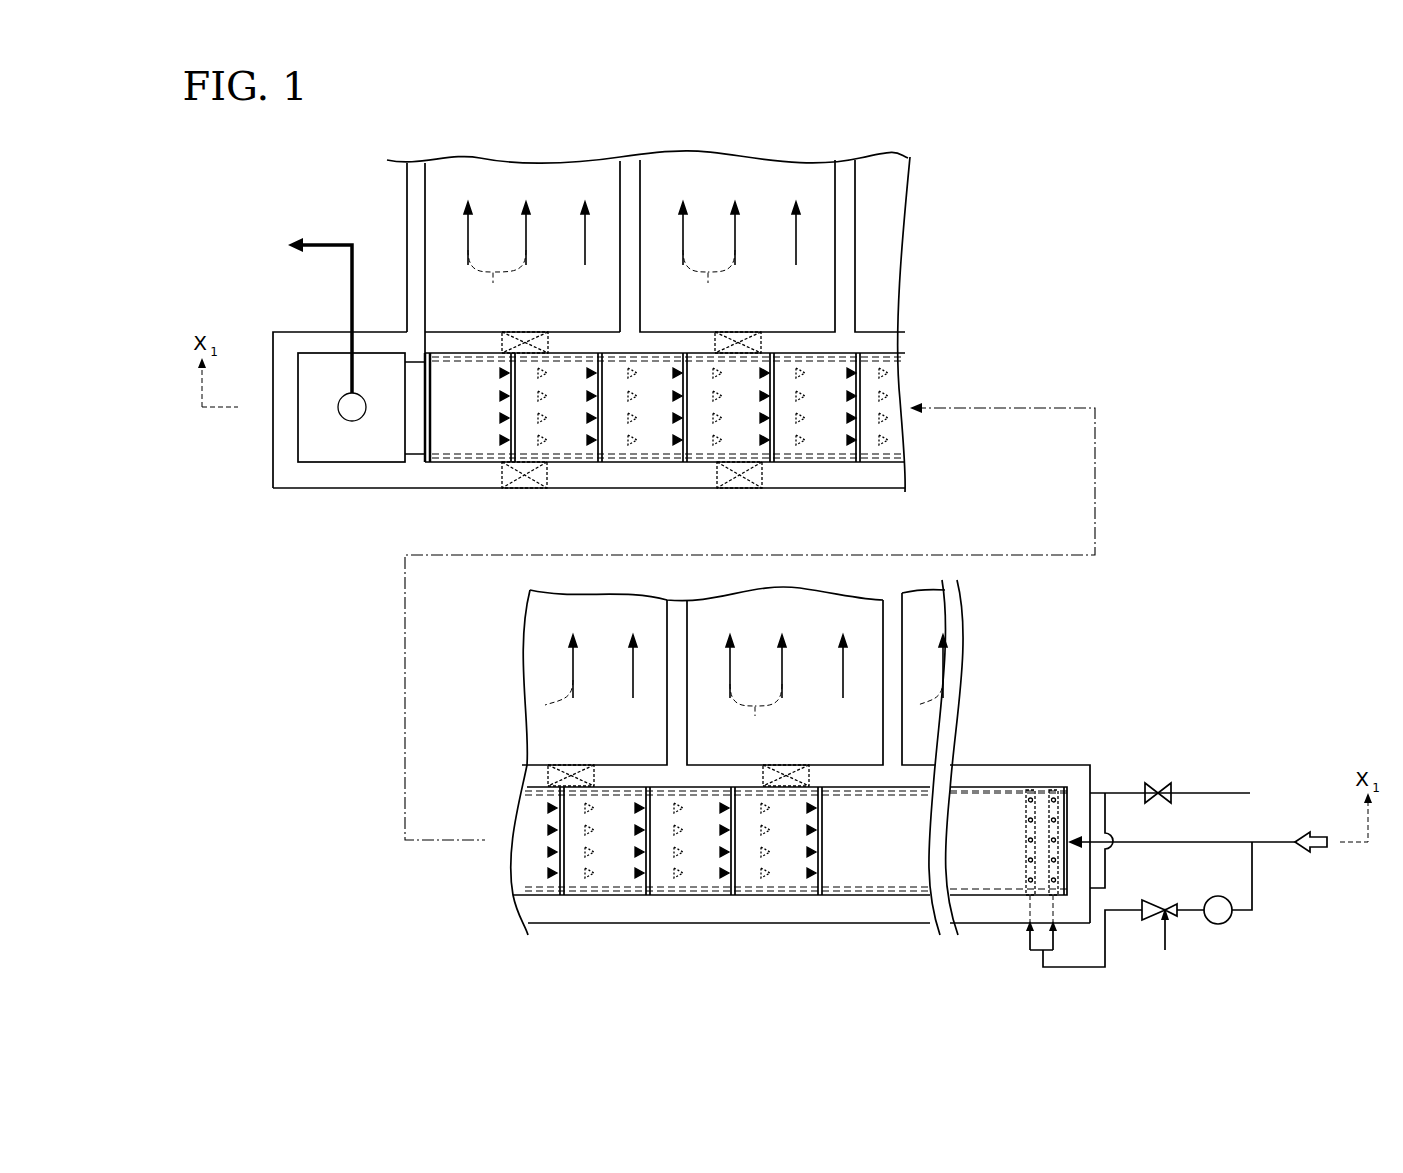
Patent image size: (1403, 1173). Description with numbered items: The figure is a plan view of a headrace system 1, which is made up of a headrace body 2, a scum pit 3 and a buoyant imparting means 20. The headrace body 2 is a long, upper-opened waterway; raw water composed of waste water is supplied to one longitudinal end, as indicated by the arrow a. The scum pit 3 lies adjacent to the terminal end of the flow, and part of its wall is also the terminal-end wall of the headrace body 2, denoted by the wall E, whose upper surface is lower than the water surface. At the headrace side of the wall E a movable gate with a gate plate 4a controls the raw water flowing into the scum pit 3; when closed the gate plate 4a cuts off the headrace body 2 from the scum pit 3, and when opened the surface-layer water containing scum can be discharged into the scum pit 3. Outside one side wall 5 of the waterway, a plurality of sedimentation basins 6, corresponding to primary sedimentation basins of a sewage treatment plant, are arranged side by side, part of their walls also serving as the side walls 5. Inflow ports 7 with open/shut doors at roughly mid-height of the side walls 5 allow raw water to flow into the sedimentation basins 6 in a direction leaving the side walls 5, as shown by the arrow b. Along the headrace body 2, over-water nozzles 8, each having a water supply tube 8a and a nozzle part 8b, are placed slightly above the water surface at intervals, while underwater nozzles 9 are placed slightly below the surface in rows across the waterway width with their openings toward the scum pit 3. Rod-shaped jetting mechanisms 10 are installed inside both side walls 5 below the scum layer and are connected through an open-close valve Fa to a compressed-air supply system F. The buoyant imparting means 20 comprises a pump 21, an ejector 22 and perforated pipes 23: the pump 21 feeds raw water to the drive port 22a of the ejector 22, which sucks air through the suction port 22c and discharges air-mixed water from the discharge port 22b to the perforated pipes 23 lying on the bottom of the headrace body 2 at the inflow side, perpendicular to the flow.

The headrace system 1 is at (960, 333).
The headrace body 2 is at (903, 330).
The scum pit 3 is at (315, 451).
The gate plate 4a is at (425, 430).
The side wall 5 is at (895, 348).
The sedimentation basin 6 is at (517, 191).
The inflow port 7 is at (522, 340).
The over-water nozzle 8 is at (580, 385).
The water supply tube 8a is at (498, 387).
The nozzle part 8b is at (498, 420).
The underwater nozzle 9 is at (548, 443).
The jetting mechanism 10 is at (903, 372).
The buoyant imparting means 20 is at (1255, 915).
The pump 21 is at (1228, 924).
The ejector 22 is at (1172, 919).
The drive port 22a is at (1180, 910).
The discharge port 22b is at (1142, 905).
The suction port 22c is at (1163, 922).
The perforated pipe 23 is at (1048, 862).
The wall E is at (407, 372).
The compressed-air supply system F is at (1213, 793).
The open-close valve Fa is at (1158, 785).
The arrow (raw water supply) a is at (1322, 848).
The arrow (inflow direction) b is at (705, 499).